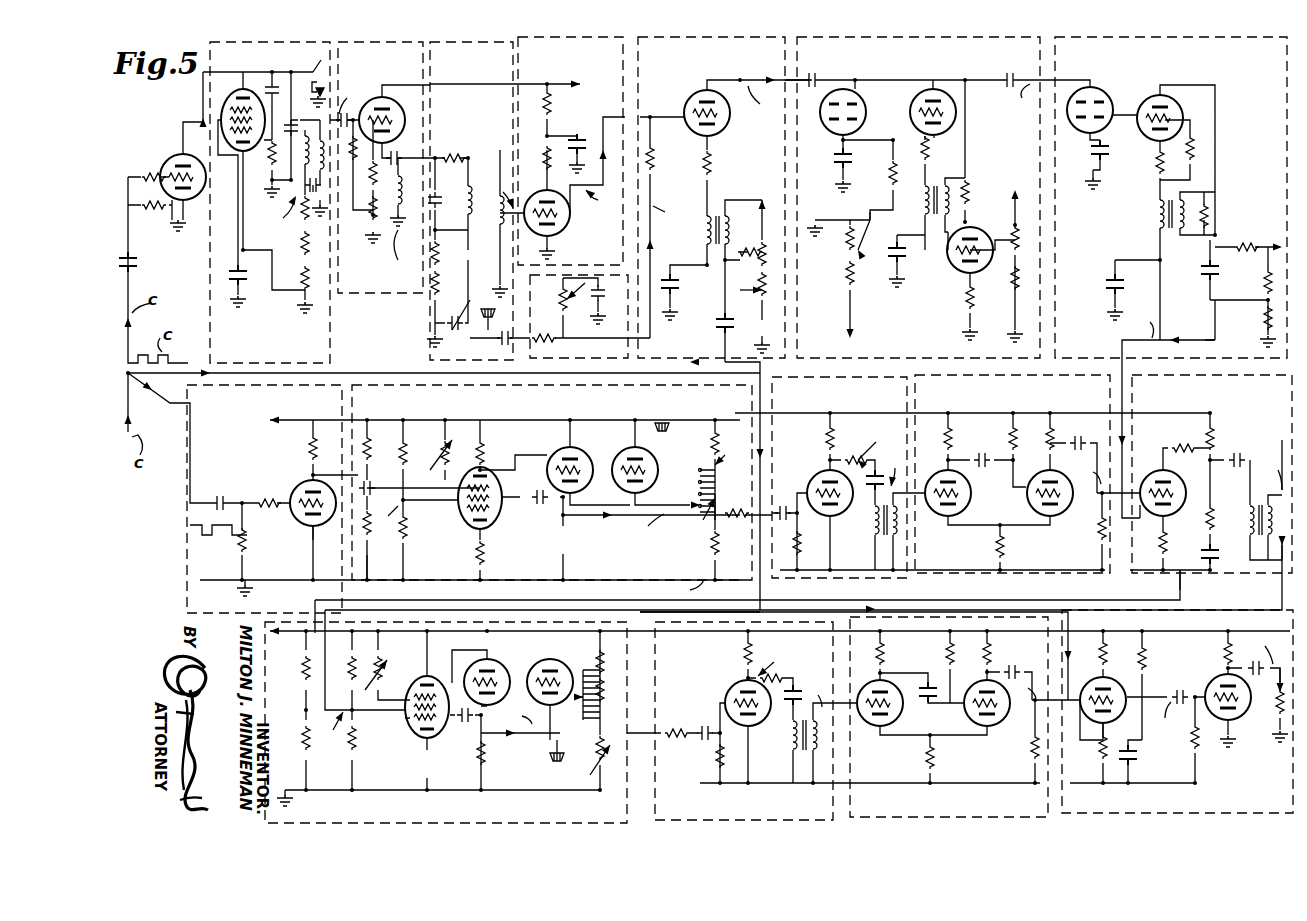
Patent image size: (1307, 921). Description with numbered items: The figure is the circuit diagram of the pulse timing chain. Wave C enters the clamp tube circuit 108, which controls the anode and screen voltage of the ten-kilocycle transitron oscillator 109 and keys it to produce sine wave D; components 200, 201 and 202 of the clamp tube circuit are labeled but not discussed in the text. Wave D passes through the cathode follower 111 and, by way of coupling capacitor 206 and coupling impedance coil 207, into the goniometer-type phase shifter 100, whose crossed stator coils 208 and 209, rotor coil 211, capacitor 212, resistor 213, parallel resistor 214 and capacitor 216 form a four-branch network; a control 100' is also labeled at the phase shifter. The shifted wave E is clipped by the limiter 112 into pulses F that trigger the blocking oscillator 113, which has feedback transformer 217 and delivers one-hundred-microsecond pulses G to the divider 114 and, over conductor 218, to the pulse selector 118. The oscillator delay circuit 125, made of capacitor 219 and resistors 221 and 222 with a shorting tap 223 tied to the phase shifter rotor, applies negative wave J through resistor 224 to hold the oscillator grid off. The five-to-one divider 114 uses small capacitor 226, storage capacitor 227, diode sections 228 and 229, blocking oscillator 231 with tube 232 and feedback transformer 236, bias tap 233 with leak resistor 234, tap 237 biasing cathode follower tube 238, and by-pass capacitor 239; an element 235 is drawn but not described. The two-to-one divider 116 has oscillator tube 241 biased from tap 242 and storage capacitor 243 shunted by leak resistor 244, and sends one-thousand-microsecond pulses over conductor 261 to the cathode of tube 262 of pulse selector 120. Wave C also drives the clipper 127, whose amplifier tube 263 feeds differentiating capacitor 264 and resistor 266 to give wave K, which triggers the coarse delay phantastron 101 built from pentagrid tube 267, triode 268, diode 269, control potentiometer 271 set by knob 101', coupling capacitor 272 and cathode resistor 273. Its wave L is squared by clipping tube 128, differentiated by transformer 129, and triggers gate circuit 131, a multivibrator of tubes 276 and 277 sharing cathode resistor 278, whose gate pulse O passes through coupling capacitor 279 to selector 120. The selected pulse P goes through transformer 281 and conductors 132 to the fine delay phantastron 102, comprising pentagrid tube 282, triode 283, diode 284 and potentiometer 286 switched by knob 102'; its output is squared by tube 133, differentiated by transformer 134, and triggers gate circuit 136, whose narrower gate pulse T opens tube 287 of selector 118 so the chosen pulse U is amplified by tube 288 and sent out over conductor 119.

The clamp tube circuit 108 is at (161, 217).
The key oscillator 109 is at (213, 254).
The sine wave phase shifter 100 is at (476, 201).
The phase shifter control 100' is at (469, 327).
The coarse delay circuit 101 is at (562, 491).
The knob 101' is at (648, 411).
The fine delay circuit 102 is at (777, 722).
The knob 102' is at (568, 762).
The cathode follower tube 111 is at (380, 182).
The limiter 112 is at (571, 151).
The blocking oscillator 113 is at (725, 325).
The 5 to 1 frequency divider 114 is at (920, 197).
The 2 to 1 frequency divider 116 is at (1171, 196).
The pulse selector circuit 118 is at (1177, 711).
The conductor 119 is at (1280, 651).
The pulse selector circuit 120 is at (1211, 482).
The oscillator delay circuit 125 is at (573, 328).
The clipper and differentiator circuit 127 is at (244, 493).
The clipping amplifier 128 is at (930, 477).
The differentiating circuit 129 is at (872, 541).
The rectangular pulse producing circuit 131 is at (1027, 474).
The conductor 132 is at (1172, 588).
The clipping amplifier 133 is at (833, 721).
The differentiating circuit 134 is at (796, 764).
The rectangular pulse producing circuit 136 is at (959, 717).
The coupling capacitor 200 is at (144, 265).
The resistor 201 is at (149, 214).
The grid resistor 202 is at (148, 185).
The coupling capacitor 206 is at (403, 151).
The coupling impedance coil 207 is at (386, 215).
The stator coil 208 is at (473, 180).
The stator coil 209 is at (449, 268).
The rotor coil 211 is at (500, 225).
The capacitor 212 is at (456, 312).
The resistor 213 is at (465, 155).
The resistor 214 is at (430, 294).
The capacitor 216 is at (446, 187).
The transformer 217 is at (723, 169).
The conductor 218 is at (740, 607).
The capacitor 219 is at (510, 360).
The resistor 221 is at (534, 330).
The resistor 222 is at (580, 310).
The shorting tap 223 is at (597, 289).
The resistor 224 is at (665, 155).
The capacitor 226 is at (826, 69).
The storage capacitor 227 is at (858, 170).
The diode section 228 is at (912, 108).
The diode section 229 is at (826, 128).
The blocking oscillator 231 is at (969, 129).
The blocking oscillator tube 232 is at (996, 91).
The bias tap 233 is at (865, 248).
The leak resistor 234 is at (888, 180).
The cathode resistor 235 is at (940, 312).
The transformer 236 is at (940, 160).
The tap 237 is at (1013, 283).
The cathode follower tube 238 is at (984, 195).
The by-pass capacitor 239 is at (897, 243).
The oscillator tube 241 is at (1178, 114).
The tap 242 is at (1267, 302).
The storage capacitor 243 is at (1122, 164).
The leak resistor 244 is at (1120, 164).
The conductor 261 is at (1212, 338).
The vacuum tube 262 is at (1154, 462).
The amplifier tube 263 is at (295, 480).
The capacitor 264 is at (350, 512).
The resistor 266 is at (402, 577).
The pentagrid tube 267 is at (520, 456).
The triode 268 is at (592, 482).
The diode 269 is at (648, 428).
The control potentiometer 271 is at (710, 484).
The coupling capacitor 272 is at (534, 487).
The cathode resistor 273 is at (482, 555).
The tube 276 is at (940, 516).
The tube 277 is at (1027, 508).
The common cathode resistor 278 is at (1010, 551).
The coupling capacitor 279 is at (1087, 428).
The transformer 281 is at (1258, 496).
The pentagrid tube 282 is at (442, 738).
The triode 283 is at (492, 660).
The diode 284 is at (560, 662).
The control potentiometer 286 is at (605, 684).
The tube 287 is at (1135, 735).
The amplifier tube 288 is at (1211, 679).